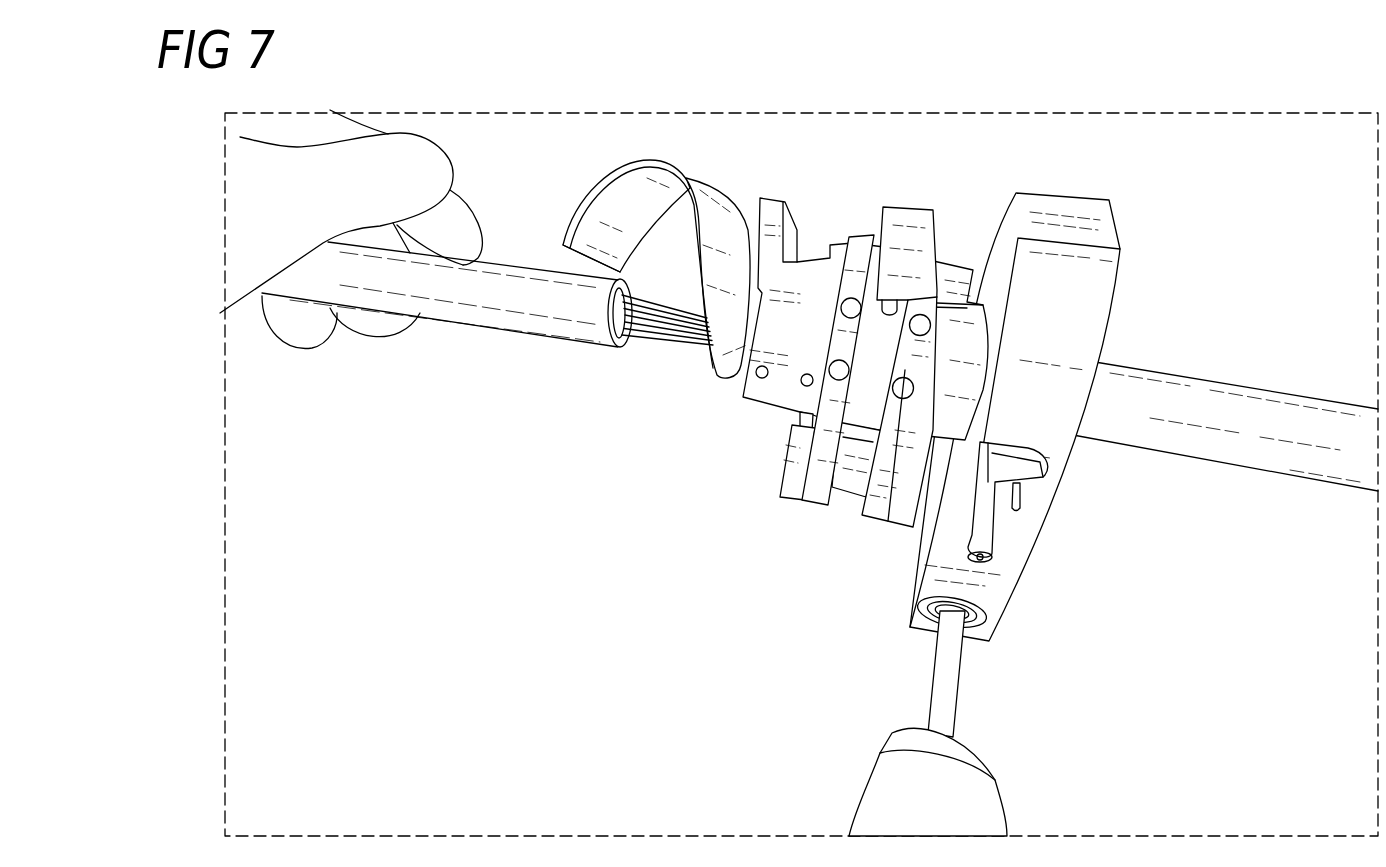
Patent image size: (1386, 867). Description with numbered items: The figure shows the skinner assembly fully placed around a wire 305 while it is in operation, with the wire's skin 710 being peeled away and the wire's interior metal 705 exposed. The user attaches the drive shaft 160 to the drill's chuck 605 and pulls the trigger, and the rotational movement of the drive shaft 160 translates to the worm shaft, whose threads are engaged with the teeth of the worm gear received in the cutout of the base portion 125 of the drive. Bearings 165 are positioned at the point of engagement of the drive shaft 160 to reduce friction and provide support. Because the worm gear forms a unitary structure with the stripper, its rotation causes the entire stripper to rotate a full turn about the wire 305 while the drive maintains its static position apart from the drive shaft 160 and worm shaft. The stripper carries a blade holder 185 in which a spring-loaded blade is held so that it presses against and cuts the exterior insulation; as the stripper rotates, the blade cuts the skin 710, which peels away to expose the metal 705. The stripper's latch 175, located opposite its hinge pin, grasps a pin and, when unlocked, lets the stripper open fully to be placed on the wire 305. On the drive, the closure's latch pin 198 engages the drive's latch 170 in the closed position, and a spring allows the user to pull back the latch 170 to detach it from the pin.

The wire's skin 710 is at (713, 188).
The wire's metal 705 is at (647, 347).
The wire 305 is at (456, 372).
The blade holder 185 is at (770, 197).
The latch 175 is at (901, 206).
The base portion 125 is at (1048, 192).
The latch 170 is at (1047, 468).
The latch pin 198 is at (1015, 510).
The bearings 165 is at (980, 618).
The drive shaft 160 is at (931, 680).
The drill's chuck 605 is at (871, 772).